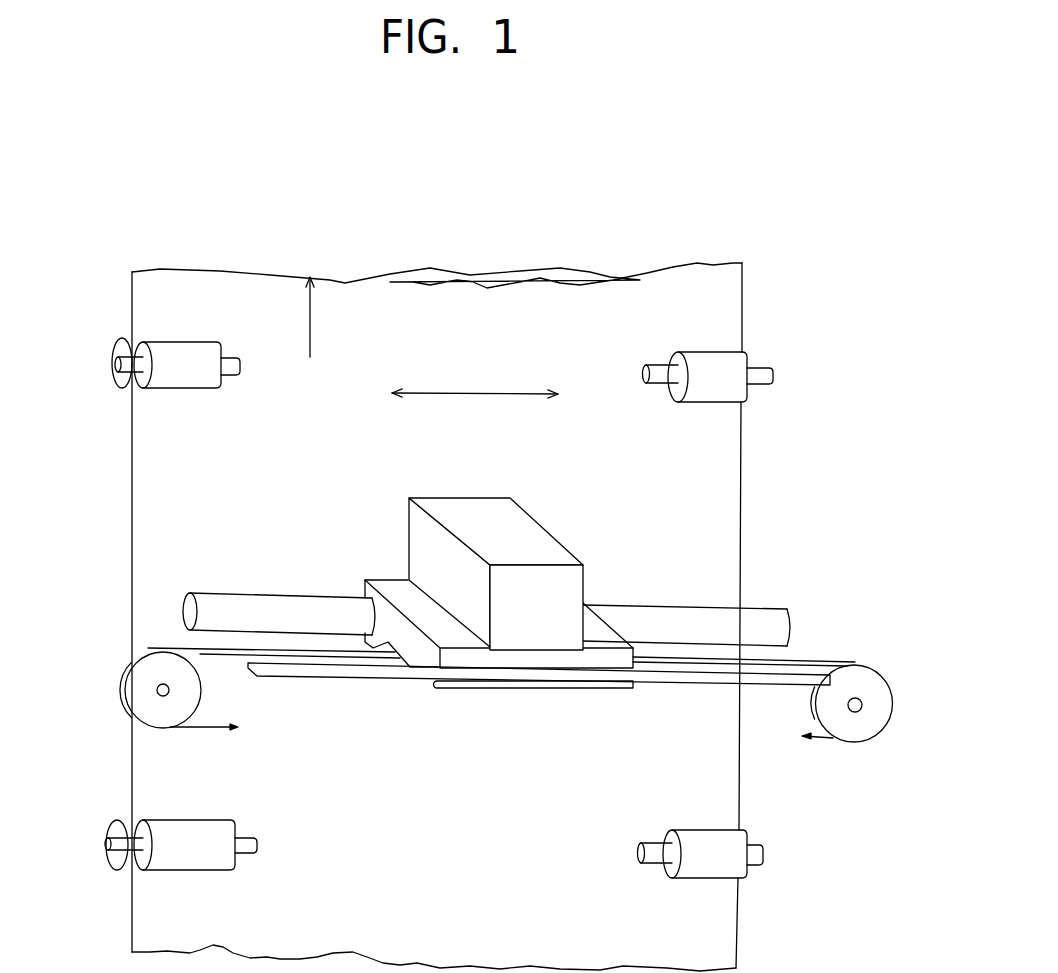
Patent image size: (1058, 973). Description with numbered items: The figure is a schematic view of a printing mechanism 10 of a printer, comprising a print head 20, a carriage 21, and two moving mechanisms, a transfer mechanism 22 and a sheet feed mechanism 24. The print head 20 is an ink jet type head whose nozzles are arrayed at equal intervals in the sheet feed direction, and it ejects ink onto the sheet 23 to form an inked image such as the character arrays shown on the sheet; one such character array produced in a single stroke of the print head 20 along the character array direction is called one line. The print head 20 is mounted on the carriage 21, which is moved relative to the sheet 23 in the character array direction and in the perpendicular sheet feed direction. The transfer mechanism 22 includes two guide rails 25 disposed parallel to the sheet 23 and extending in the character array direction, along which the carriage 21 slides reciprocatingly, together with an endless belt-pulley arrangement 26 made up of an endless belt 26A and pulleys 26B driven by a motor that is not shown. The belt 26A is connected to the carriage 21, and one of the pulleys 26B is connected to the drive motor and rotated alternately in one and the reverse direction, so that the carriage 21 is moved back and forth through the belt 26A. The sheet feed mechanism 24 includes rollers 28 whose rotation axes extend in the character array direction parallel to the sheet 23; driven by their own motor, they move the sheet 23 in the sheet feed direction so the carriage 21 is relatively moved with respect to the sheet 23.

The printing mechanism 10 is at (615, 200).
The print head 20 is at (458, 507).
The carriage 21 is at (602, 632).
The transfer mechanism 22 is at (812, 647).
The sheet 23 is at (518, 297).
The sheet feed mechanism 24 is at (755, 827).
The guide rails 25 is at (760, 613).
The endless belt-pulley arrangement 26 is at (123, 702).
The endless belt 26A is at (217, 657).
The pulleys 26B is at (863, 687).
The rollers 28 is at (187, 350).